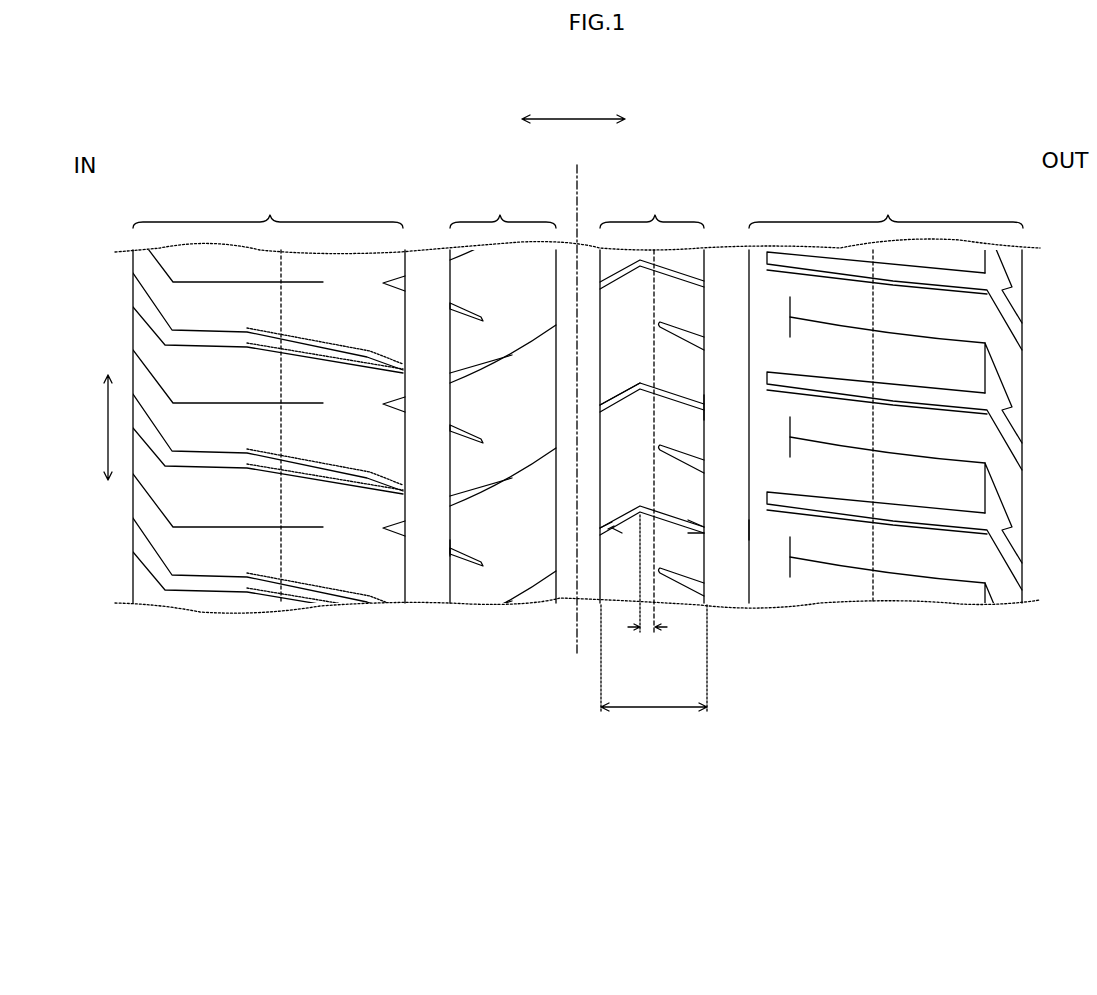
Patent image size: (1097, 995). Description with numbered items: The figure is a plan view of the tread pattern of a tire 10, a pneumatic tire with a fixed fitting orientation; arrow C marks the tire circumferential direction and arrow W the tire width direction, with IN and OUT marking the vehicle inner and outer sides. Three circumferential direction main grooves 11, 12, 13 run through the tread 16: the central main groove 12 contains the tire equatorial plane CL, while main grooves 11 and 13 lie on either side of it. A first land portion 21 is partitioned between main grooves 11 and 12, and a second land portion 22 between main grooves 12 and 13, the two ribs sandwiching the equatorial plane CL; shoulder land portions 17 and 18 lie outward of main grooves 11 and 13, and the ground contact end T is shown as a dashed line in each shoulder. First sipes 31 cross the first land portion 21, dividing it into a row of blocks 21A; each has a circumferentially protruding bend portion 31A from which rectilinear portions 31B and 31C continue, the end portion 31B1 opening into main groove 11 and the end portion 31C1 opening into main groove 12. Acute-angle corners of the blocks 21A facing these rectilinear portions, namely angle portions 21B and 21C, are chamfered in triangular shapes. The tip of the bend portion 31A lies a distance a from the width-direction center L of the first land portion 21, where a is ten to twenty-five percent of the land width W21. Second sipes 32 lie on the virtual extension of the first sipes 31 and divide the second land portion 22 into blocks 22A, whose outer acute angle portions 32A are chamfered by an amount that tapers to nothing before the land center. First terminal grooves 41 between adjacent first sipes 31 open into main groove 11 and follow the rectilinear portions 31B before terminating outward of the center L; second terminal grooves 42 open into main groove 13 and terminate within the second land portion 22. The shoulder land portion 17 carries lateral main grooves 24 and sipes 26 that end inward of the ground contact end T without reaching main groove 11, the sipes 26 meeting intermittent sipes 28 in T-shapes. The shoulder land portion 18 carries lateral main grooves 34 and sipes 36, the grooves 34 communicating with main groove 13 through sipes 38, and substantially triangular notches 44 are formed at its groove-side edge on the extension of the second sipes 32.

The tire 10 is at (941, 150).
The circumferential direction main groove 11 is at (720, 248).
The circumferential direction main groove 12 is at (567, 248).
The circumferential direction main groove 13 is at (430, 262).
The tread 16 is at (836, 170).
The shoulder land portion 17 is at (886, 394).
The shoulder land portion 18 is at (269, 394).
The first land portion 21 is at (652, 394).
The block 21A is at (740, 412).
The angle portion 21B is at (693, 520).
The angle portion 21C is at (600, 530).
The second land portion 22 is at (503, 394).
The block 22A is at (452, 550).
The lateral main groove 24 is at (858, 508).
The sipe 26 is at (832, 452).
The sipe 28 is at (798, 434).
The first sipe 31 is at (612, 515).
The bend portion 31A is at (622, 407).
The rectilinear portion 31B is at (688, 521).
The end portion 31B1 is at (752, 531).
The rectilinear portion 31C is at (622, 533).
The end portion 31C1 is at (613, 527).
The second sipe 32 is at (509, 357).
The angle portion 32A is at (454, 373).
The lateral main groove 34 is at (368, 342).
The sipe 36 is at (305, 405).
The sipe 38 is at (392, 362).
The first terminal groove 41 is at (707, 463).
The second terminal groove 42 is at (448, 418).
The notch 44 is at (410, 415).
The tire circumferential direction C is at (102, 438).
The tire equatorial plane CL is at (580, 168).
The ground contact end T is at (280, 542).
The tire width direction W is at (572, 118).
The width of the first land portion W21 is at (654, 658).
The distance a is at (637, 577).
The center in the width direction of the first land portion L is at (657, 589).